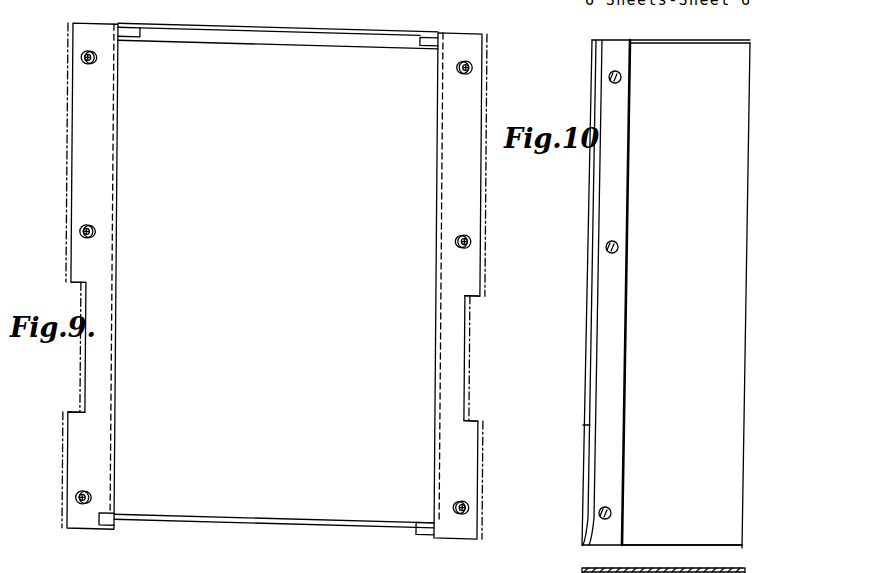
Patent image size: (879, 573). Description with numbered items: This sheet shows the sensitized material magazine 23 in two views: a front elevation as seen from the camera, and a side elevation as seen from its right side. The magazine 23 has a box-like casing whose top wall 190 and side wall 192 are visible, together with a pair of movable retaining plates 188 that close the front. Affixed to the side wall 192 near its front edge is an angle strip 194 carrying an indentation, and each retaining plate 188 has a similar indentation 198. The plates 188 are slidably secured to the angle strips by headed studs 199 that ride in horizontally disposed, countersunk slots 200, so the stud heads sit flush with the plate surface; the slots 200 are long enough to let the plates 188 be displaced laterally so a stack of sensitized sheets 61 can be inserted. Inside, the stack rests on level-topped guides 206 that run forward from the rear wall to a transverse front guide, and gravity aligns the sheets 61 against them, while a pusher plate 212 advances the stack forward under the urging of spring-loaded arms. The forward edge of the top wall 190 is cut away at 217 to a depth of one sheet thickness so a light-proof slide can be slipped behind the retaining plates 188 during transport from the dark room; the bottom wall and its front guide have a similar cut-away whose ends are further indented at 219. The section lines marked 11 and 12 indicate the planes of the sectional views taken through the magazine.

In FIG. 9, the retaining plate 188 is at (88, 446).
In FIG. 10, the retaining plate 188 is at (591, 189).
In FIG. 9, the indentation 198 is at (80, 378).
In FIG. 9, the headed stud 199 is at (474, 242).
In FIG. 9, the slot 200 is at (93, 496).
In FIG. 9, the top wall 190 is at (196, 27).
In FIG. 9, the pusher plate 212 is at (336, 40).
In FIG. 9, the guide 206 is at (340, 525).
In FIG. 9, the indented end 219 is at (116, 520).
In FIG. 9, the sheet 61 is at (370, 375).
In FIG. 9, the section line 12- 12 is at (283, 3).
In FIG. 10, the angle strip 194 is at (608, 374).
In FIG. 10, the sensitized material magazine 23 is at (724, 317).
In FIG. 10, the side wall 192 is at (706, 423).
In FIG. 10, the cut away portion 217 is at (585, 567).
In FIG. 10, the section line 11- 11 is at (747, 17).